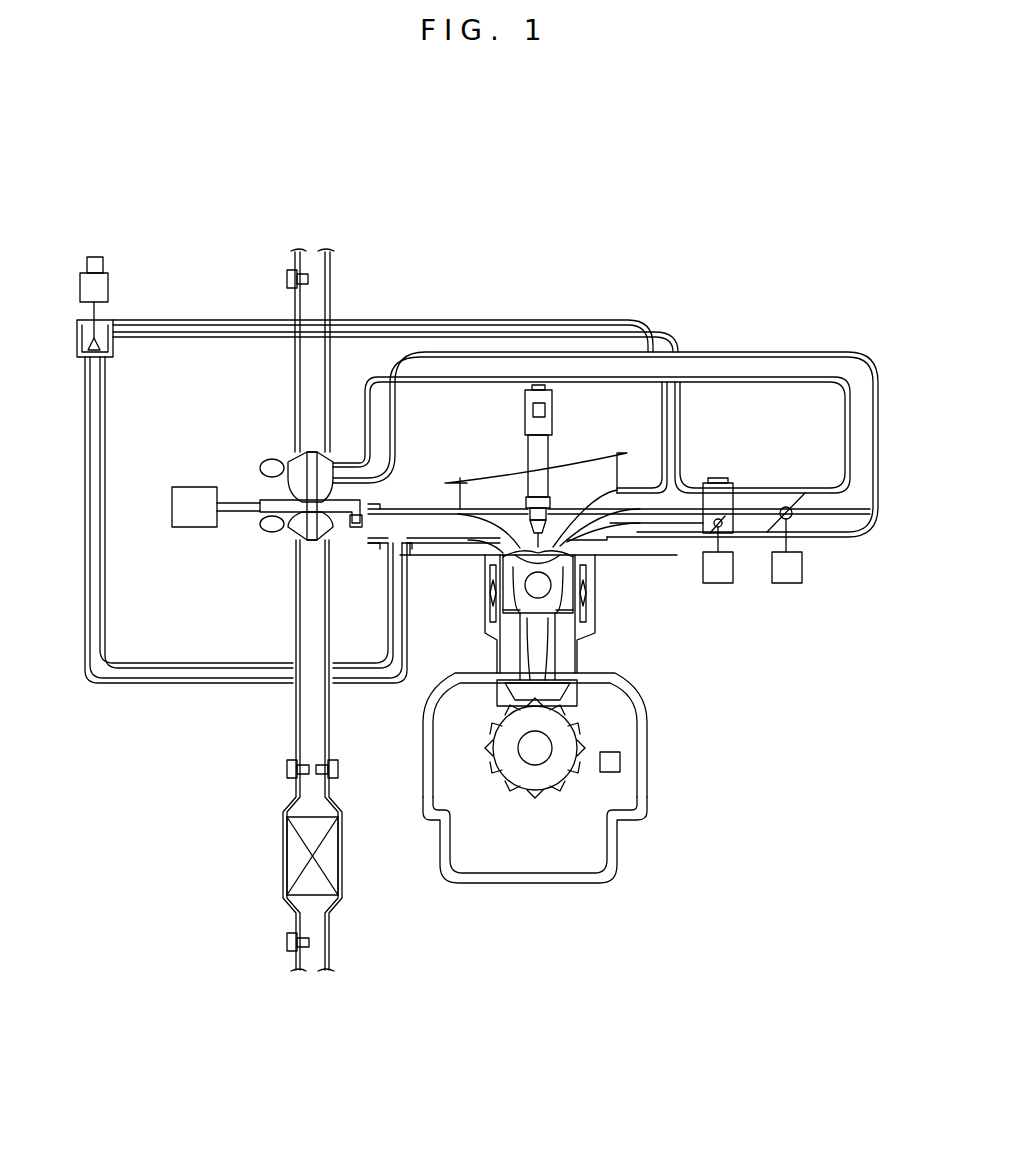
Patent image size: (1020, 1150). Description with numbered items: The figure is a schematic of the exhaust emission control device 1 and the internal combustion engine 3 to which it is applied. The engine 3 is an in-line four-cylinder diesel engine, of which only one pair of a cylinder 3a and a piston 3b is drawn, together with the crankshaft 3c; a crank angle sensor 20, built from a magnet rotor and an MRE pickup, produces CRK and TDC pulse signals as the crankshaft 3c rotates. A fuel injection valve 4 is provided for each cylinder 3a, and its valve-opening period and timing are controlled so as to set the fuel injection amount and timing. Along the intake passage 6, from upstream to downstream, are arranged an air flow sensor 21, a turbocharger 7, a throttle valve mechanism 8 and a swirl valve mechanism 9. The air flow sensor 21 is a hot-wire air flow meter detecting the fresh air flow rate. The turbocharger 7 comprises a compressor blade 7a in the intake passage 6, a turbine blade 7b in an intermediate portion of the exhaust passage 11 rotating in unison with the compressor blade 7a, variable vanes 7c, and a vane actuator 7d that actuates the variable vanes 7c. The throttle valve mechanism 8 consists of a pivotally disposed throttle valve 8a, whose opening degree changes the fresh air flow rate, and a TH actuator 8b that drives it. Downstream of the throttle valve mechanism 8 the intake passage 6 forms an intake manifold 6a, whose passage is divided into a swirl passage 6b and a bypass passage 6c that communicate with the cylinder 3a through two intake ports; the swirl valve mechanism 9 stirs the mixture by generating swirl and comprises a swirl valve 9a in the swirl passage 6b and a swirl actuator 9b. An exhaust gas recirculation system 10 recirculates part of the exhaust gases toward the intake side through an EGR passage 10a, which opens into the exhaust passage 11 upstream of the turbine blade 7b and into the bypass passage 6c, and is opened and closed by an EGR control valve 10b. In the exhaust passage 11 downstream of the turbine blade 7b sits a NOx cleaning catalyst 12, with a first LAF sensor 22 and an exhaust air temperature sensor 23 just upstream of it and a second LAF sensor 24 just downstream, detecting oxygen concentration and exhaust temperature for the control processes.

The exhaust emission control device 1 is at (265, 1033).
The internal combustion engine 3 is at (693, 843).
The cylinder 3a is at (505, 637).
The piston 3b is at (510, 565).
The crankshaft 3c is at (535, 750).
The fuel injection valve 4 is at (525, 415).
The intake passage 6 is at (330, 285).
The intake manifold 6a is at (705, 485).
The swirl passage 6b is at (612, 526).
The bypass passage 6c is at (612, 505).
The turbocharger 7 is at (238, 438).
The compressor blade 7a is at (295, 458).
The turbine blade 7b is at (300, 540).
The variable vane 7c is at (265, 530).
The vane actuator 7d is at (190, 487).
The throttle valve mechanism 8 is at (790, 583).
The throttle valve 8a is at (806, 492).
The TH actuator 8b is at (787, 567).
The swirl valve mechanism 9 is at (712, 583).
The swirl valve 9a is at (730, 517).
The swirl actuator 9b is at (718, 567).
The exhaust gas recirculation system 10 is at (120, 222).
The EGR passage 10a is at (155, 320).
The EGR control valve 10b is at (108, 287).
The exhaust passage 11 is at (297, 625).
The NOx cleaning catalyst 12 is at (330, 855).
The crank angle sensor 20 is at (622, 762).
The air flow sensor 21 is at (287, 277).
The first LAF sensor 22 is at (287, 768).
The exhaust air temperature sensor 23 is at (335, 762).
The second LAF sensor 24 is at (287, 942).